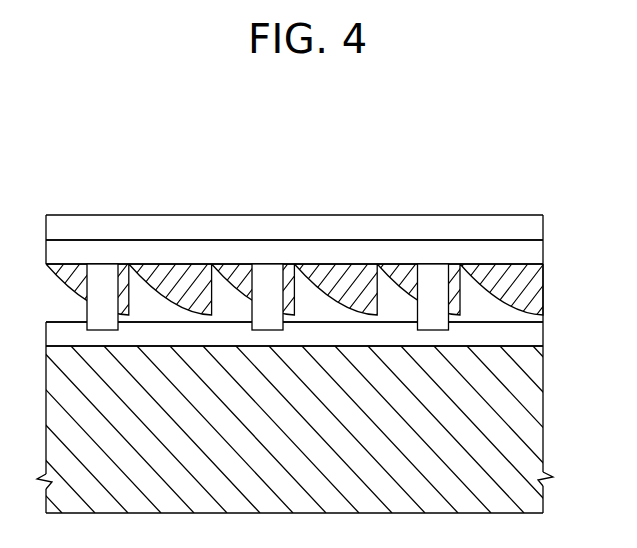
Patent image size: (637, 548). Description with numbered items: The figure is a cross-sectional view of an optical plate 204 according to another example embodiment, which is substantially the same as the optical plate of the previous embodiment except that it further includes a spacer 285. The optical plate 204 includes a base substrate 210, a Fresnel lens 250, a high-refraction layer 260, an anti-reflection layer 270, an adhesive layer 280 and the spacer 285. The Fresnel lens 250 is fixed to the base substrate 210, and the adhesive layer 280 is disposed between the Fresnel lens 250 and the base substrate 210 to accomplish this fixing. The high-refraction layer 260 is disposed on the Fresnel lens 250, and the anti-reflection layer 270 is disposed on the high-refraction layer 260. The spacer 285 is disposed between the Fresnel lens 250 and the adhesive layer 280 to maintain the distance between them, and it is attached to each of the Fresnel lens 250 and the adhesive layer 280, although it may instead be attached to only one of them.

The optical plate 204 is at (302, 138).
The base substrate 210 is at (540, 399).
The Fresnel lens 250 is at (540, 288).
The high-refraction layer 260 is at (540, 252).
The anti-reflection layer 270 is at (540, 229).
The adhesive layer 280 is at (540, 338).
The spacer 285 is at (432, 278).